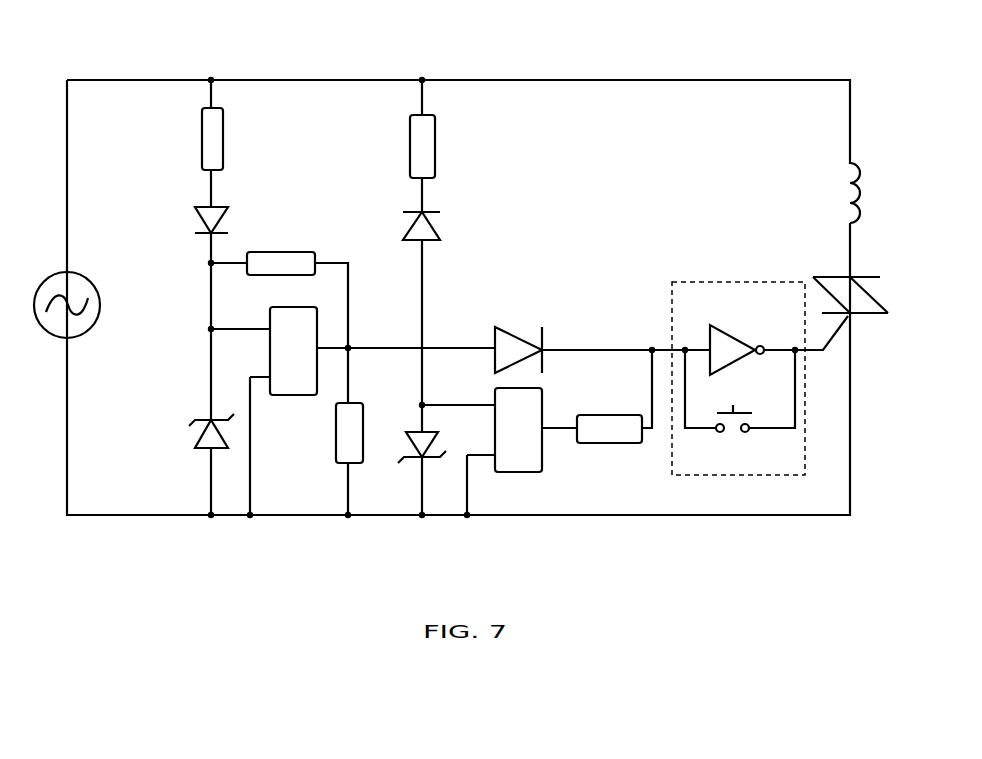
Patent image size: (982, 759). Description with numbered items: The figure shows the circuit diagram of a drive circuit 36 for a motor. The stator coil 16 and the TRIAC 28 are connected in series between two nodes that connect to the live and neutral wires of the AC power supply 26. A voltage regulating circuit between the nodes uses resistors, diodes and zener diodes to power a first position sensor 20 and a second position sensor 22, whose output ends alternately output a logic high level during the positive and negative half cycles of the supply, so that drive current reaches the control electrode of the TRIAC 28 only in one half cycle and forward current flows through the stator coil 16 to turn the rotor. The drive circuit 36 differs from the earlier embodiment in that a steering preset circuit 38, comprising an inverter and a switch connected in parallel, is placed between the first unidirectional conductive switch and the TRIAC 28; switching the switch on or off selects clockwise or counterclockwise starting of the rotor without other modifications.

The stator coil 16 is at (837, 183).
The first position sensor 20 is at (283, 307).
The second position sensor 22 is at (518, 472).
The AC power supply 26 is at (86, 276).
The TRIAC 28 is at (814, 272).
The drive circuit 36 is at (779, 70).
The steering preset circuit 38 is at (672, 283).